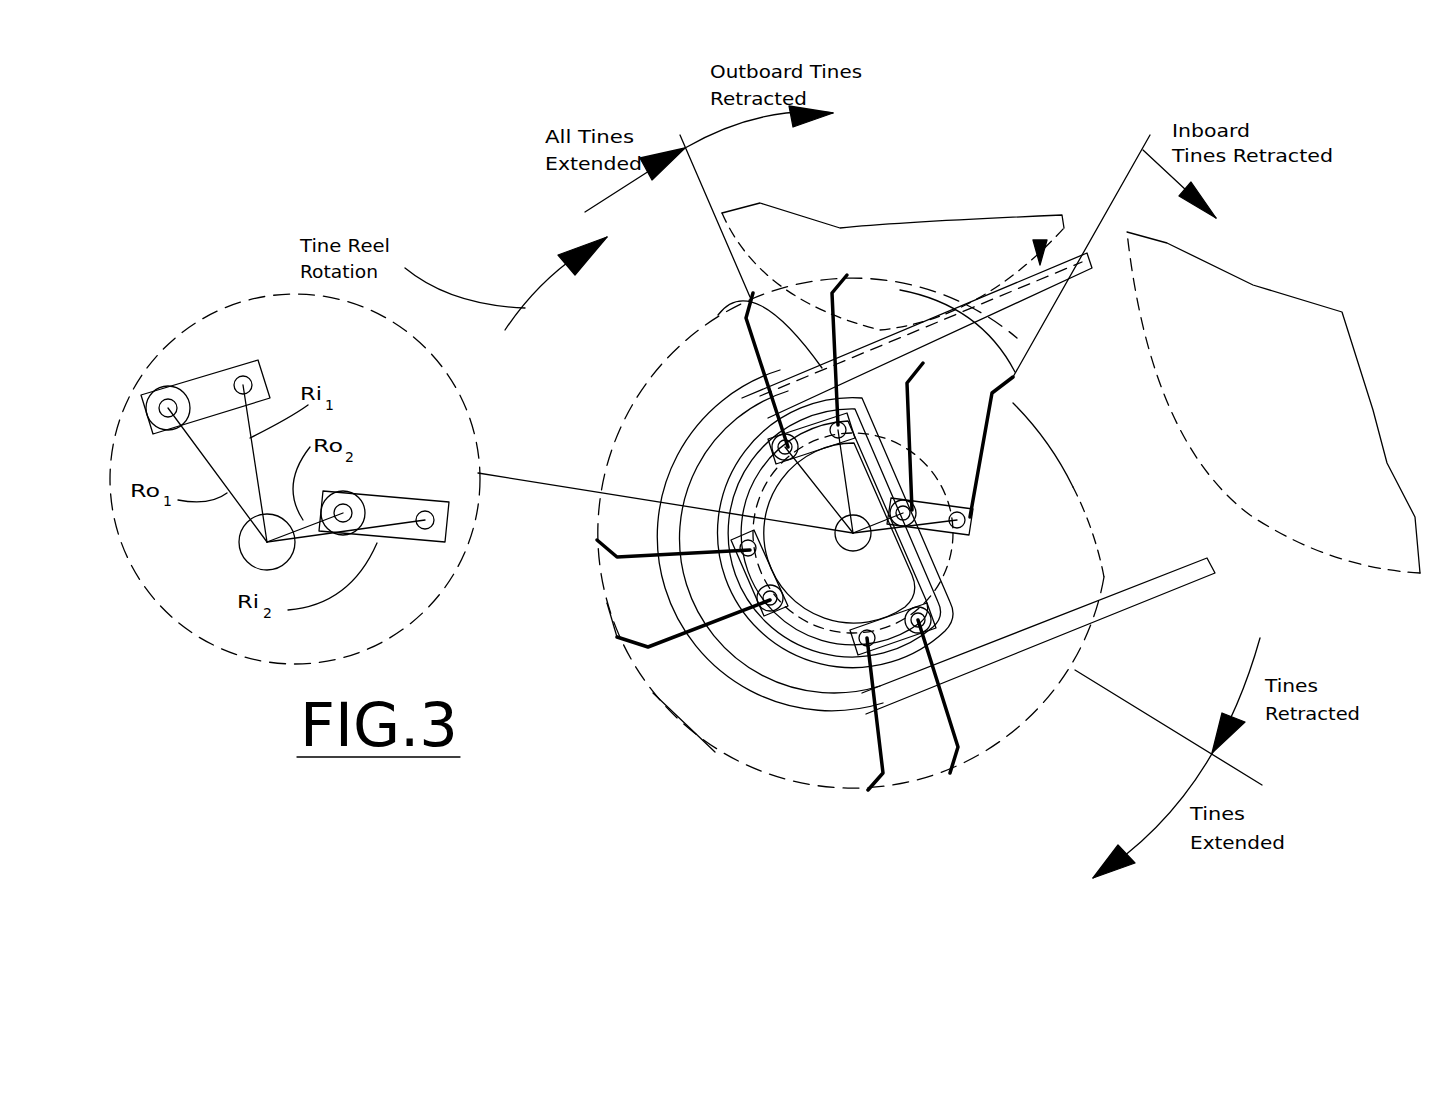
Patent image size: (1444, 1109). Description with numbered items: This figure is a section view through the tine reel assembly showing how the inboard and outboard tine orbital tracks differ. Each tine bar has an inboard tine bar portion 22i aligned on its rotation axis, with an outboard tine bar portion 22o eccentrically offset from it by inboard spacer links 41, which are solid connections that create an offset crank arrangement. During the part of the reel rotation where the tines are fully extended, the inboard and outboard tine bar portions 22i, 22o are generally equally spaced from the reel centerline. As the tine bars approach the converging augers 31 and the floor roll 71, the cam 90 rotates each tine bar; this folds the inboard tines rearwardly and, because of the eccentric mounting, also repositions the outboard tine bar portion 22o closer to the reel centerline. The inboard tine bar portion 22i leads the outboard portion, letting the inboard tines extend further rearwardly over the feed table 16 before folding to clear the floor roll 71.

The feed table 16 is at (1040, 245).
The converging augers 31 is at (798, 228).
The inboard spacer links 41 is at (210, 372).
The inboard tine bar portion 22i is at (847, 277).
The outboard tine bar portion 22o is at (747, 350).
The floor roll 71 is at (1263, 310).
The cam 90 is at (798, 633).